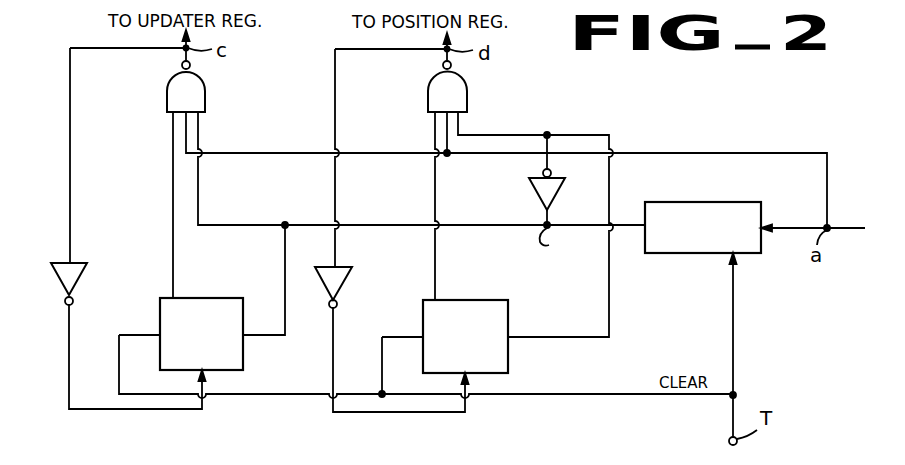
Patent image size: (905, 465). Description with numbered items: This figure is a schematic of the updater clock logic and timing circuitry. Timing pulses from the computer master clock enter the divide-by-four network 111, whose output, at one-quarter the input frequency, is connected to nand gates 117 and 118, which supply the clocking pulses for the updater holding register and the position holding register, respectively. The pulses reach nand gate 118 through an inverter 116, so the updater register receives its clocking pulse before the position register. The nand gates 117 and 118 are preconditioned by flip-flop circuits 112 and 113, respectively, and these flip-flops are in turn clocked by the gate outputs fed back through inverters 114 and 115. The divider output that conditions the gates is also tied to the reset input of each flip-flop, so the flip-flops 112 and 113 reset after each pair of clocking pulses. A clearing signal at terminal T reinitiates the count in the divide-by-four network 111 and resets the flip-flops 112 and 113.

The divide-by-four network 111 is at (700, 202).
The flip-flop circuit 112 is at (202, 298).
The flip-flop circuit 113 is at (508, 312).
The inverter 114 is at (80, 276).
The inverter 115 is at (345, 278).
The inverter 116 is at (537, 192).
The nand gate 117 is at (205, 89).
The nand gate 118 is at (467, 93).